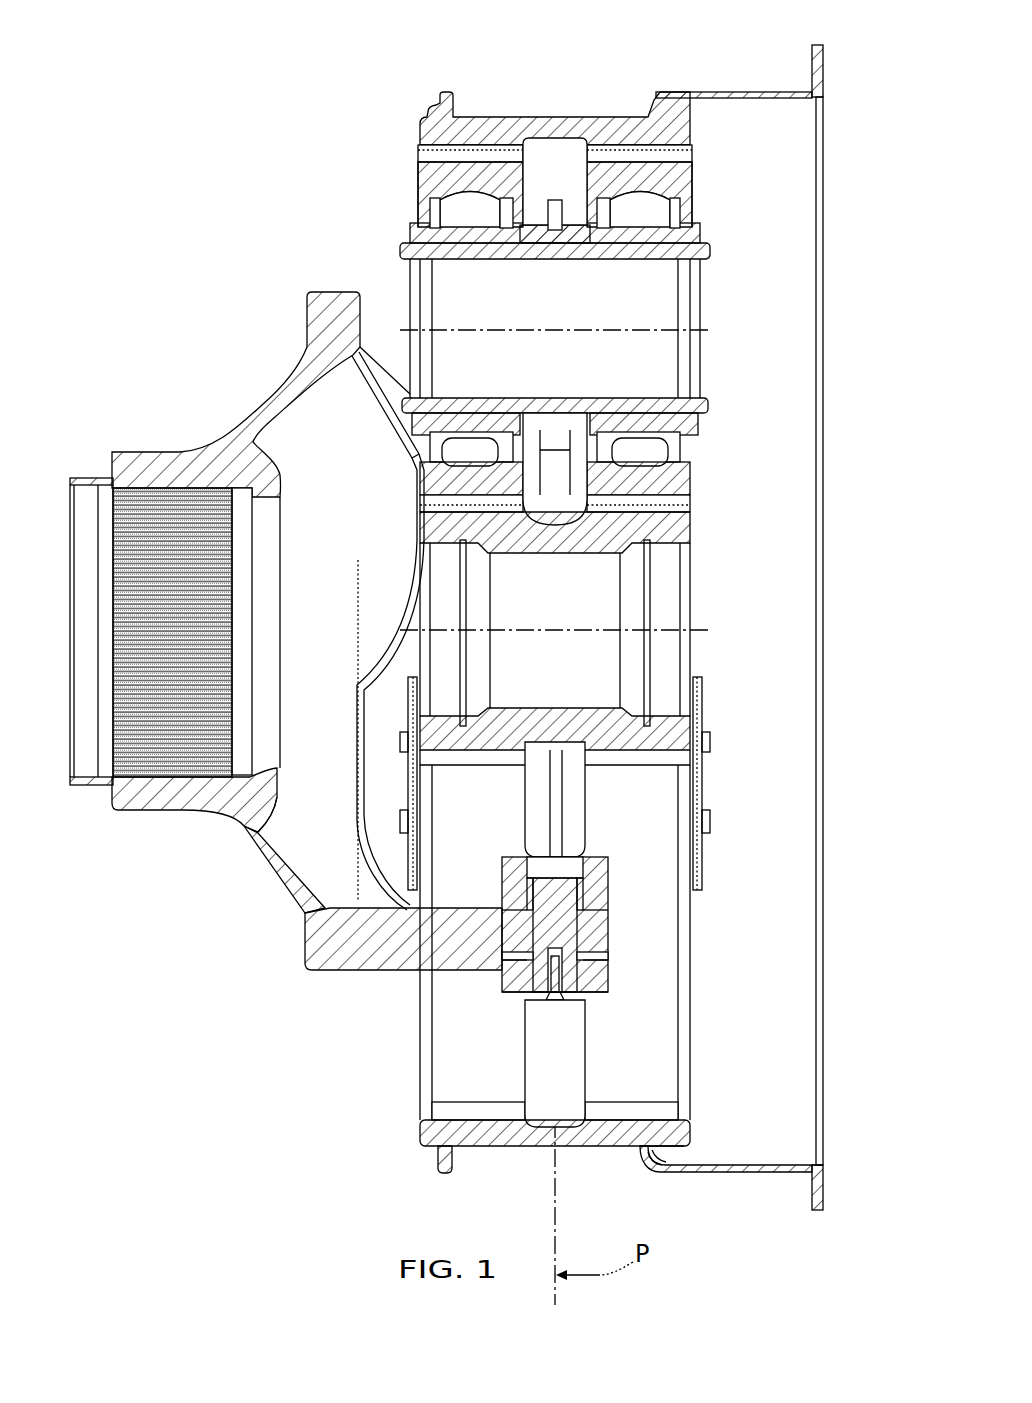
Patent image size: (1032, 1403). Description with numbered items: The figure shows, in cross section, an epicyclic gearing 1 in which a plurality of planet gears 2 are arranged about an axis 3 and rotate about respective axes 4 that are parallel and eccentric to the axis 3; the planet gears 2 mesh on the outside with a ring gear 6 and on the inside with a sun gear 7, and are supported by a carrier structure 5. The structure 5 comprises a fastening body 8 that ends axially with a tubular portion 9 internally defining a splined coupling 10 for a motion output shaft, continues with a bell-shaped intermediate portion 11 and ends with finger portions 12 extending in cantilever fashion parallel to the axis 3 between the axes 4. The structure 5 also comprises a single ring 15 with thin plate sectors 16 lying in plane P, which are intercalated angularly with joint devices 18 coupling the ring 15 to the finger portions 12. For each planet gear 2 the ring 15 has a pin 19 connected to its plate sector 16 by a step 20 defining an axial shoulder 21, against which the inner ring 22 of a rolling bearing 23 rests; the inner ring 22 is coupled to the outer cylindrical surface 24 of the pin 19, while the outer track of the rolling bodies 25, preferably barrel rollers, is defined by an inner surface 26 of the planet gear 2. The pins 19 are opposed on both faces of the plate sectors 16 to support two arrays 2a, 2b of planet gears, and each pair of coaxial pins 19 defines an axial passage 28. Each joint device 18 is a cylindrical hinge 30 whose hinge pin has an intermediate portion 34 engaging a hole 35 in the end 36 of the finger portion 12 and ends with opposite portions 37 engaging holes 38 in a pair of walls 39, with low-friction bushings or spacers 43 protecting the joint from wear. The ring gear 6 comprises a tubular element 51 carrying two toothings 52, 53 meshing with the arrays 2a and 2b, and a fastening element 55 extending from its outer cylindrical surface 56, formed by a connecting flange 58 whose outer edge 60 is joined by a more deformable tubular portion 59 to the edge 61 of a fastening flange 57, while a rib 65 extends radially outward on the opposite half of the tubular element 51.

The epicyclic gearing 1 is at (533, 82).
The planet gears 2 is at (482, 188).
The array of planet gears 2a is at (632, 122).
The array of planet gears 2b is at (490, 122).
The axis 3 is at (705, 630).
The axes 4 is at (710, 330).
The planet gear carrier structure 5 is at (317, 992).
The ring gear 6 is at (563, 125).
The sun gear 7 is at (690, 525).
The fastening body 8 is at (240, 855).
The coupling portion 9 is at (135, 805).
The splined coupling 10 is at (215, 555).
The bell-shaped intermediate portion 11 is at (268, 875).
The finger portions 12 is at (398, 955).
The ring 15 is at (528, 790).
The plate sectors 16 is at (535, 820).
The joint devices 18 is at (508, 1003).
The pin 19 is at (410, 252).
The step 20 is at (525, 237).
The axial shoulder 21 is at (506, 248).
The inner ring 22 is at (418, 243).
The rolling bearing 23 is at (410, 210).
The outer cylindrical surface 24 is at (455, 165).
The rolling bodies 25 is at (505, 186).
The inner surface 26 is at (482, 124).
The axial passage 28 is at (662, 388).
The cylindrical hinge 30 is at (572, 1003).
The inner bearing part 34 is at (580, 935).
The hole 35 is at (590, 962).
The end of the finger portion 36 is at (605, 975).
The opposite portions 37 is at (590, 905).
The holes 38 is at (572, 865).
The walls 39 is at (598, 892).
The bushings or spacers 43 is at (510, 980).
The tubular element 51 is at (503, 1145).
The toothing 52 is at (678, 1110).
The toothing 53 is at (428, 1105).
The fastening element 55 is at (735, 1182).
The outer cylindrical surface 56 is at (619, 1160).
The fastening flange 57 is at (825, 1180).
The connecting flange 58 is at (645, 1172).
The tubular portion 59 is at (785, 1175).
The outer edge 60 is at (670, 1160).
The edge 61 is at (823, 1165).
The rib 65 is at (440, 1172).